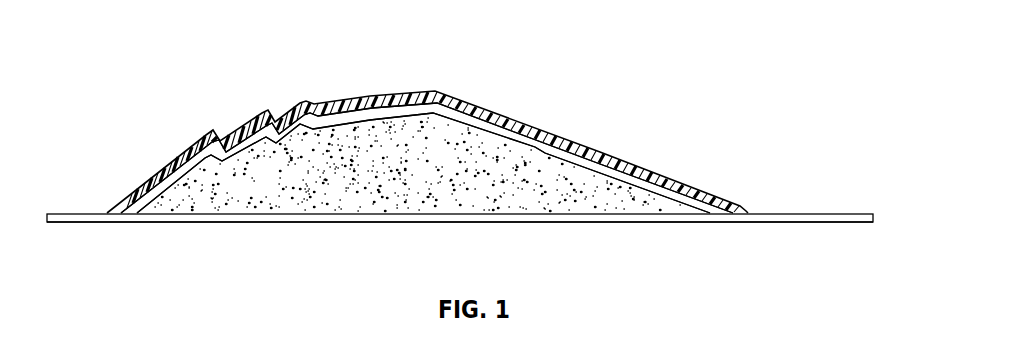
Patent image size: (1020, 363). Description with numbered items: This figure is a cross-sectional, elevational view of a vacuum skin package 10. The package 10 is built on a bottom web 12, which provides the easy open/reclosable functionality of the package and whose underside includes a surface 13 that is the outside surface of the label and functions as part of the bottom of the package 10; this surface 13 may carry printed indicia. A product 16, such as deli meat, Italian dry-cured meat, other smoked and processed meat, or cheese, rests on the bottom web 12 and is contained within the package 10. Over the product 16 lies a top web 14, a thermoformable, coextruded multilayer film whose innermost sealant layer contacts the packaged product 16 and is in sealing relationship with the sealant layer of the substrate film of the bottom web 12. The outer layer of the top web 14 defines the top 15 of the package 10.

The package 10 is at (812, 97).
The bottom web 12 is at (866, 223).
The surface 13 is at (480, 223).
The top web 14 is at (592, 148).
The top 15 is at (443, 91).
The product 16 is at (355, 147).